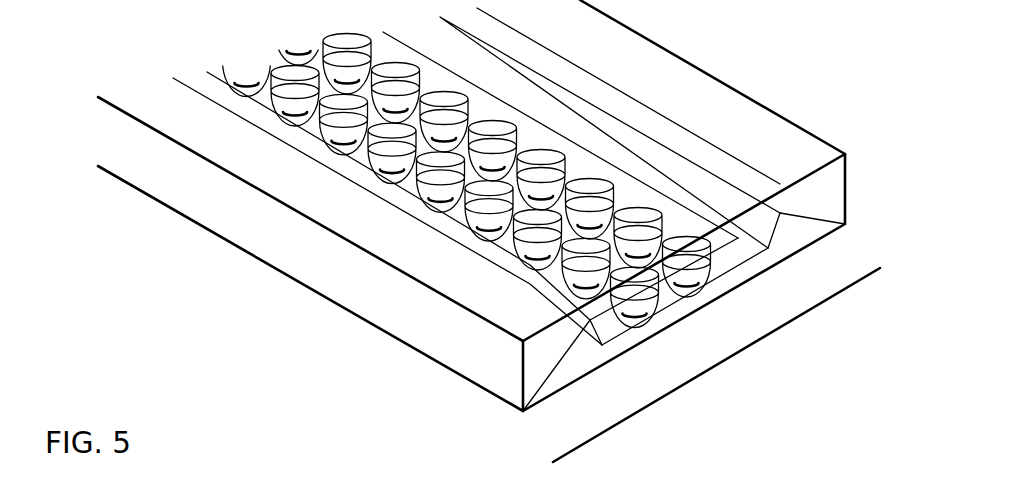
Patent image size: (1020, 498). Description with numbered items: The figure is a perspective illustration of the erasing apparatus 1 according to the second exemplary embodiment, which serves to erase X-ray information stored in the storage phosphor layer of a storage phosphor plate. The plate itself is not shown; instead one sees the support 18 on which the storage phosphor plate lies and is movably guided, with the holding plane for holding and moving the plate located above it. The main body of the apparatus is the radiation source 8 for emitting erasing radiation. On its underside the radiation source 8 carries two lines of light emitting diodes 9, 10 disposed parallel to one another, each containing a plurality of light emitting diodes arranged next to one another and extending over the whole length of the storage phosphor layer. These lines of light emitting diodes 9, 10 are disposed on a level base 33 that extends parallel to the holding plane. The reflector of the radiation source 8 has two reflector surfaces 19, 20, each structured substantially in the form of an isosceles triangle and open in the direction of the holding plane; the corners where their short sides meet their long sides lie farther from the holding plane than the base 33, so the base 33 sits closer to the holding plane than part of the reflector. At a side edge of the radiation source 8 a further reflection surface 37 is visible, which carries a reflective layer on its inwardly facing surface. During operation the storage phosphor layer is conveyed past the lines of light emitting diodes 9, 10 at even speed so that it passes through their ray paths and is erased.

The erasing apparatus 1 is at (838, 119).
The radiation source 8 is at (260, 290).
The line of light emitting diodes 9 is at (669, 305).
The line of light emitting diodes 10 is at (720, 277).
The support 18 is at (660, 382).
The reflector surface 19 is at (440, 343).
The reflector surface 20 is at (627, 107).
The base 33 is at (607, 328).
The reflection surface 37 is at (838, 183).